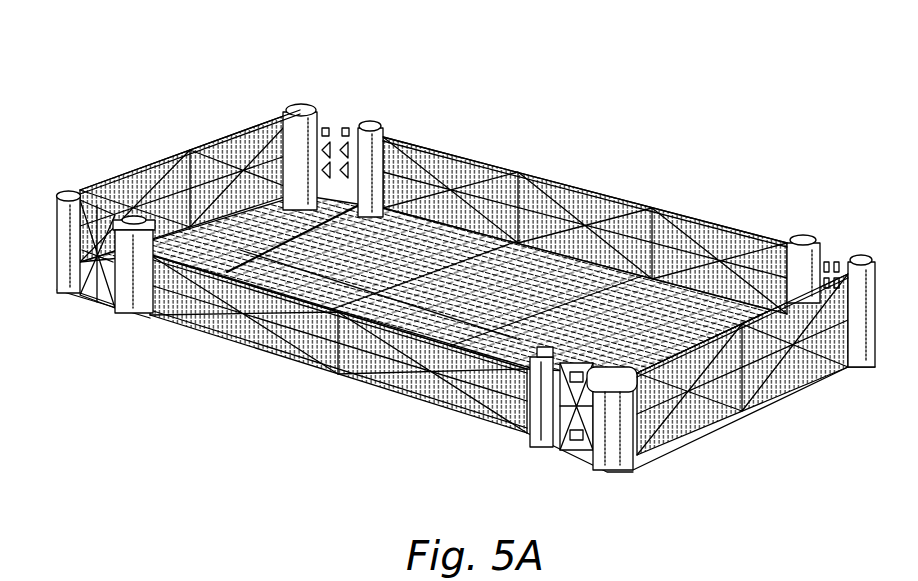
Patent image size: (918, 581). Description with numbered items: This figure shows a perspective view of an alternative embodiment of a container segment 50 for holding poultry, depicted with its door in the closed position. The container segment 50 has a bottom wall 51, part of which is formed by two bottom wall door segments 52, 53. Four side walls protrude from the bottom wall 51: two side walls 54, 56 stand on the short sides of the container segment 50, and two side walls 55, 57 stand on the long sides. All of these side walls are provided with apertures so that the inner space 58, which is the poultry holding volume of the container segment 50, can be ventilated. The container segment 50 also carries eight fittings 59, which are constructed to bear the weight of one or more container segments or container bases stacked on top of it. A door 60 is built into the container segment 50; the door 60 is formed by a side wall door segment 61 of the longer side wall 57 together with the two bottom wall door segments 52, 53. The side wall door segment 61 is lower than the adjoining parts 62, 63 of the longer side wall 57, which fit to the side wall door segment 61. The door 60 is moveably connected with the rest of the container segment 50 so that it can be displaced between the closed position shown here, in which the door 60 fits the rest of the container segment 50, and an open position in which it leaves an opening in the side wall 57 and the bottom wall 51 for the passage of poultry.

The container segment 50 is at (607, 172).
The bottom wall 51 is at (535, 275).
The bottom wall door segment 52 is at (500, 322).
The bottom wall door segment 53 is at (420, 332).
The side wall 54 is at (203, 170).
The side wall 55 is at (480, 187).
The side wall 56 is at (753, 375).
The side wall 57 is at (157, 323).
The inner space 58 is at (637, 303).
The fitting 59 is at (133, 218).
The door 60 is at (230, 343).
The side wall door segment 61 is at (330, 350).
The adjoining part 62 is at (100, 257).
The adjoining part 63 is at (570, 420).